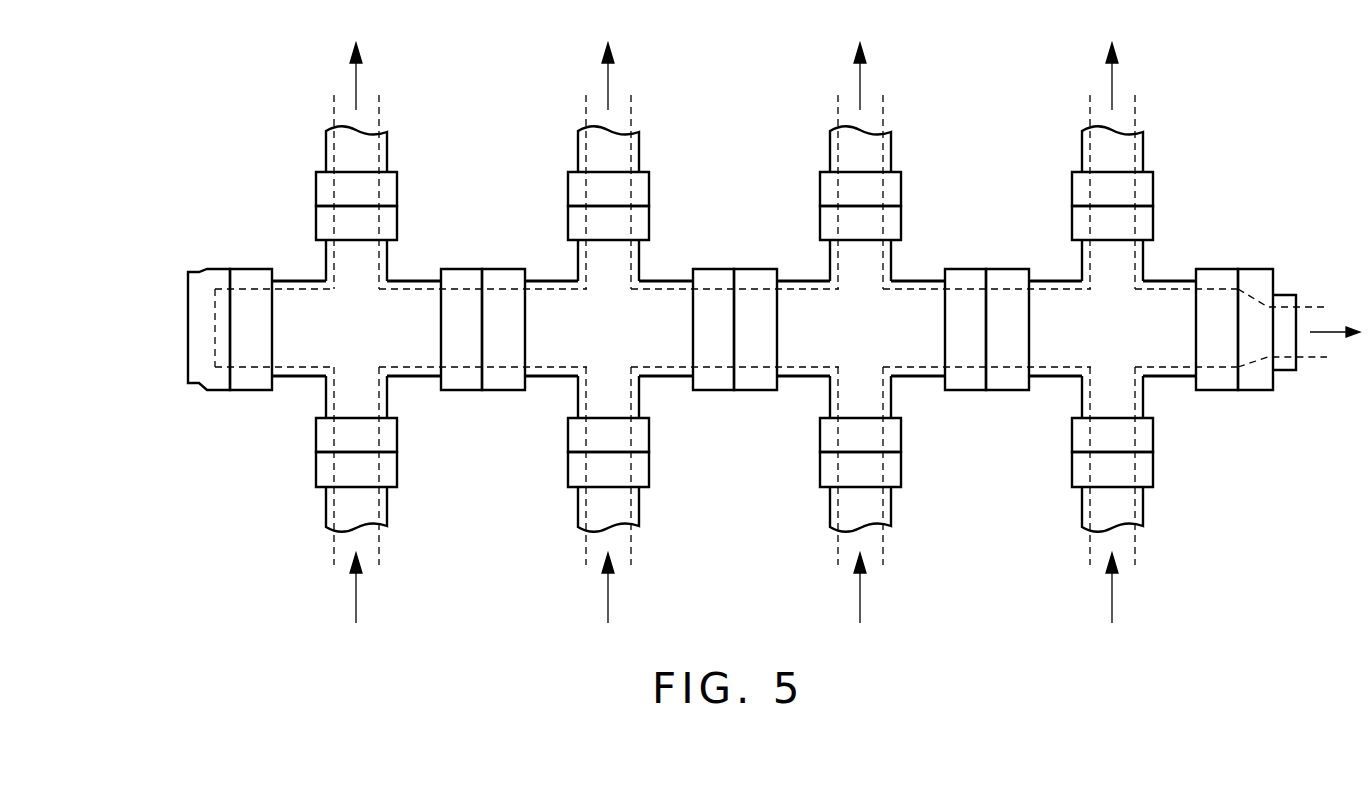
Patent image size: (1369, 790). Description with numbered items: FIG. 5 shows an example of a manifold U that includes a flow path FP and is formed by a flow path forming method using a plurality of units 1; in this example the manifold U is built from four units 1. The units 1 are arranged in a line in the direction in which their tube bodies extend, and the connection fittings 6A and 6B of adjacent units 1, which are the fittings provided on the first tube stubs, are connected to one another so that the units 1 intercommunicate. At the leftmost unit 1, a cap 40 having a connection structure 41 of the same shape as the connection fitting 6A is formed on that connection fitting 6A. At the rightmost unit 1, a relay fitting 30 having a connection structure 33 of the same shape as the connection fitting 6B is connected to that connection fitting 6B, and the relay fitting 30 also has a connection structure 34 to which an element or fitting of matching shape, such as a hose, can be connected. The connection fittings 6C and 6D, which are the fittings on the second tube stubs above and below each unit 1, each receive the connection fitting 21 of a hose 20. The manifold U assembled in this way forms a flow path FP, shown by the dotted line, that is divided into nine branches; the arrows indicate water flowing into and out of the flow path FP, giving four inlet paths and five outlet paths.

The unit 1 is at (410, 378).
The hose 20 is at (326, 147).
The connection fitting of the hose 21 is at (397, 190).
The connection fitting 6A is at (250, 269).
The connection fitting 6B is at (462, 269).
The connection fitting 6C is at (316, 437).
The connection fitting 6D is at (316, 222).
The relay fitting 30 is at (1299, 288).
The connection structure 33 is at (1262, 269).
The connection structure 34 is at (1285, 293).
The cap 40 is at (171, 296).
The connection structure 41 is at (213, 266).
The flow path FP is at (334, 553).
The manifold U is at (1218, 112).